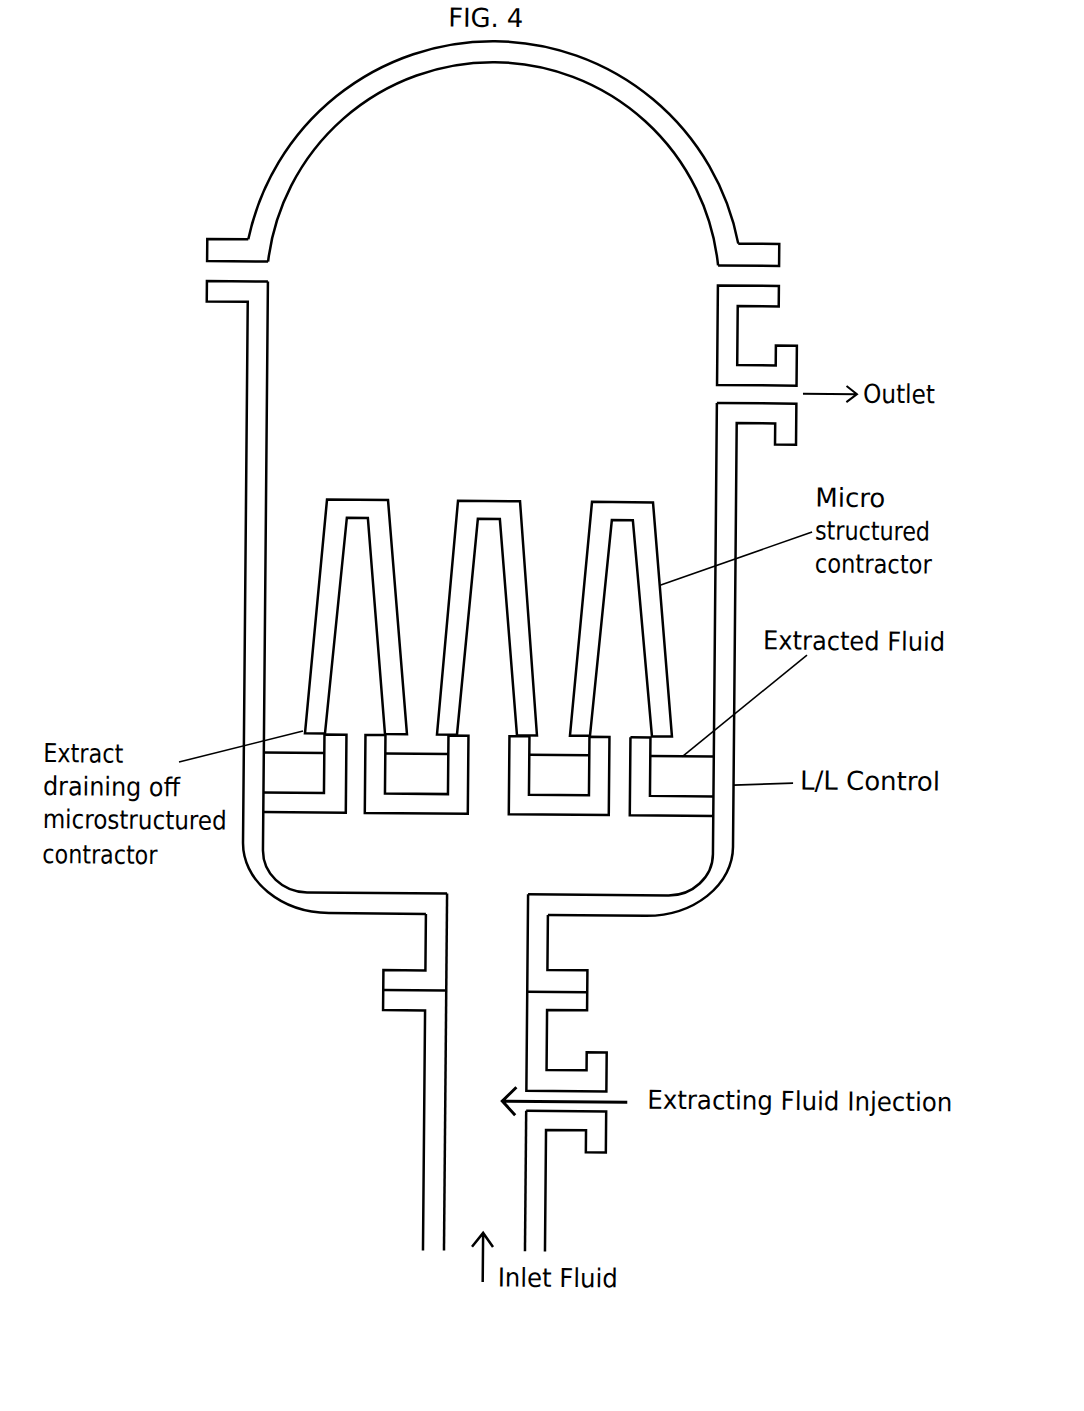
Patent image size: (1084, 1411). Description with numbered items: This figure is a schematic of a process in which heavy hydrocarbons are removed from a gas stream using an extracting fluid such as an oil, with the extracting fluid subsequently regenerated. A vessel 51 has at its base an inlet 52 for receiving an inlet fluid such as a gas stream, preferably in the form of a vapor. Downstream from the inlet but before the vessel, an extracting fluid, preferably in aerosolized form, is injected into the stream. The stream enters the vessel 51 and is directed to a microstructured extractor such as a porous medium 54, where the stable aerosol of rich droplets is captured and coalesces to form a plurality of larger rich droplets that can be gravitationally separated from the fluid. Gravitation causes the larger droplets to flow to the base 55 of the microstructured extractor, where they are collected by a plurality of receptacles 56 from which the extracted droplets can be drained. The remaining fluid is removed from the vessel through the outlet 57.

The vessel 51 is at (244, 456).
The inlet 52 is at (428, 1173).
The porous medium 54 is at (315, 614).
The base of the microstructured extractor 55 is at (244, 736).
The receptacles 56 is at (427, 816).
The outlet 57 is at (758, 361).